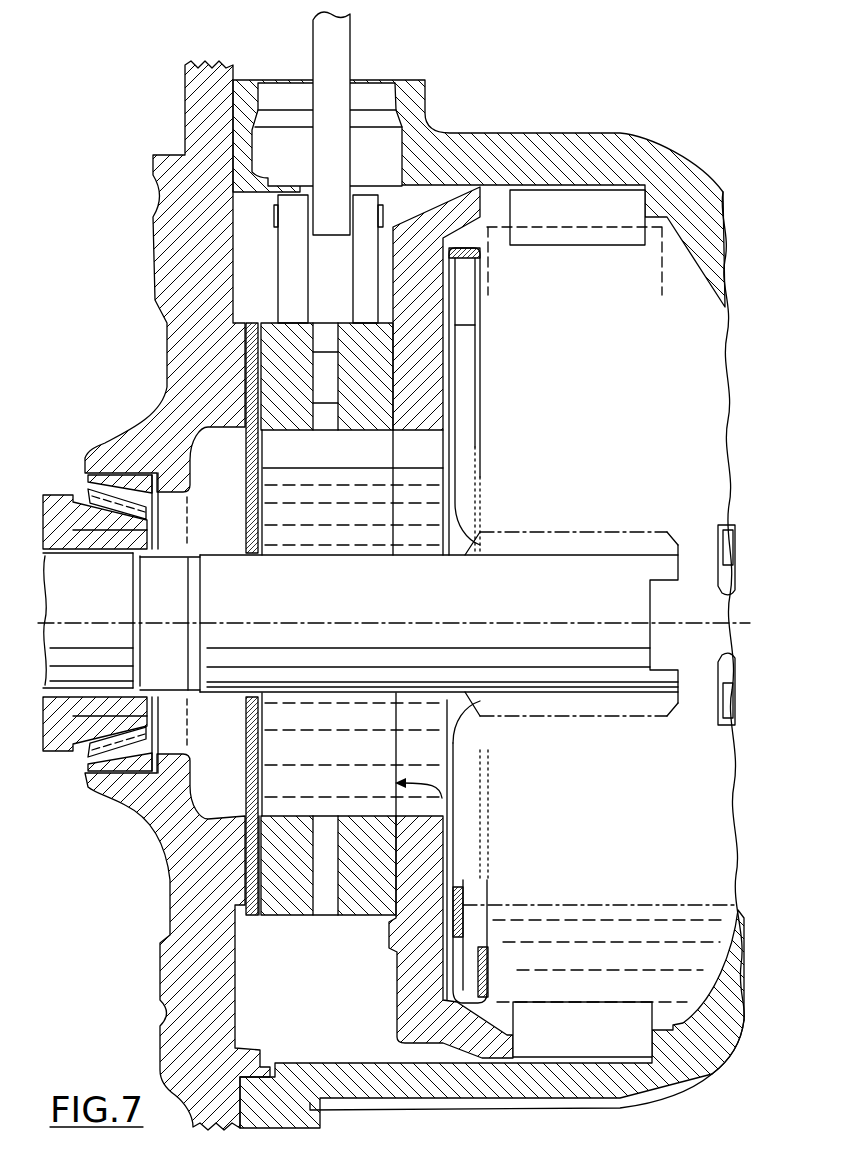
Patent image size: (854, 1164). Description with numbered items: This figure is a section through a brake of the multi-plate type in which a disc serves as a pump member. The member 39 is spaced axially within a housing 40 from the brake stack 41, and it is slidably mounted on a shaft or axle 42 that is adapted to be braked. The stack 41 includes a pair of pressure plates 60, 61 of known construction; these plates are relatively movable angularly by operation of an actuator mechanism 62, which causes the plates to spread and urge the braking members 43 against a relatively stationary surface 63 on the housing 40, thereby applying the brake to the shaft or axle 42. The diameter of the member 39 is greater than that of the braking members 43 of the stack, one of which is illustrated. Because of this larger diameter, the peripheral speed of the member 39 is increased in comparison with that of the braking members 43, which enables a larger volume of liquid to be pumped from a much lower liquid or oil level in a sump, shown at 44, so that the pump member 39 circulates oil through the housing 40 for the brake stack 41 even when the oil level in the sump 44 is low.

The member 39 is at (452, 498).
The housing 40 is at (185, 383).
The brake stack 41 is at (372, 906).
The shaft or axle 42 is at (437, 605).
The braking members 43 is at (257, 920).
The sump 44 is at (655, 903).
The pressure plate 60 is at (290, 342).
The pressure plate 61 is at (380, 368).
The actuator mechanism 62 is at (315, 155).
The relatively stationary surface 63 is at (243, 871).